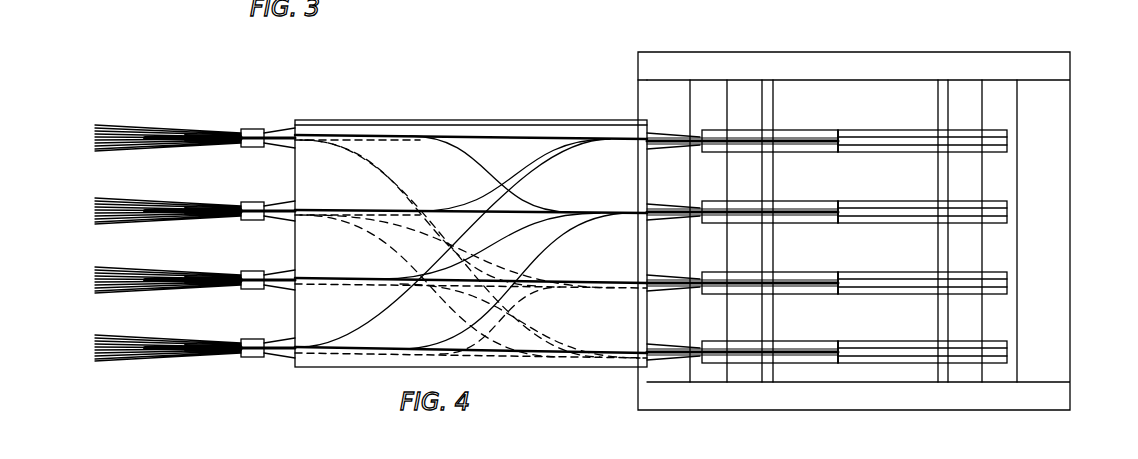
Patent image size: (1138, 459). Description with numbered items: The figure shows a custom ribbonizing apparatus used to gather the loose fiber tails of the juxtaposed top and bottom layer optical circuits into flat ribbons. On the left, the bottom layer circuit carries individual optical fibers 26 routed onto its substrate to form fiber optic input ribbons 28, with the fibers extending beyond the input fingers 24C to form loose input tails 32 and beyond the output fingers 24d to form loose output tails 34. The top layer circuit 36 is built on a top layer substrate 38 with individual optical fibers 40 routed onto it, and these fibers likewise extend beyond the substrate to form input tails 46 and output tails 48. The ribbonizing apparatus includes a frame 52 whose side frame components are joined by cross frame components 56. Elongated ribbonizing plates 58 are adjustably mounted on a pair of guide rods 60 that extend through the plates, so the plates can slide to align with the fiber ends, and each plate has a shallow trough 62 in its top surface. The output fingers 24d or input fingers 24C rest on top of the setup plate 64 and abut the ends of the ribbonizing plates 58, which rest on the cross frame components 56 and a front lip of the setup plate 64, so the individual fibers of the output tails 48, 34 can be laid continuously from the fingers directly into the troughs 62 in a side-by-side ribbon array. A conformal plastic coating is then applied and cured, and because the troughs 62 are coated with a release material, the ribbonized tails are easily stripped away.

In FIG. 4, the input fingers 24C is at (254, 204).
In FIG. 4, the output fingers 24d is at (675, 280).
In FIG. 4, the individual optical fibers 26 is at (562, 268).
In FIG. 3, the fiber optic input ribbons 28 is at (203, 9).
In FIG. 4, the input tails 32 is at (150, 152).
In FIG. 4, the output tails 34 is at (708, 65).
In FIG. 3, the top layer circuit 36 is at (498, 8).
In FIG. 4, the top layer circuit 36 is at (378, 118).
In FIG. 3, the top layer substrate 38 is at (585, 6).
In FIG. 4, the top layer substrate 38 is at (505, 122).
In FIG. 4, the individual optical fibers 40 is at (503, 187).
In FIG. 4, the input tails 46 is at (133, 122).
In FIG. 4, the output tails 48 is at (780, 133).
In FIG. 4, the frame 52 is at (885, 52).
In FIG. 4, the cross frame components 56 is at (765, 103).
In FIG. 4, the ribbonizing plates 58 is at (908, 131).
In FIG. 4, the guide rods 60 is at (728, 100).
In FIG. 4, the shallow trough 62 is at (845, 136).
In FIG. 4, the setup plate 64 is at (645, 95).